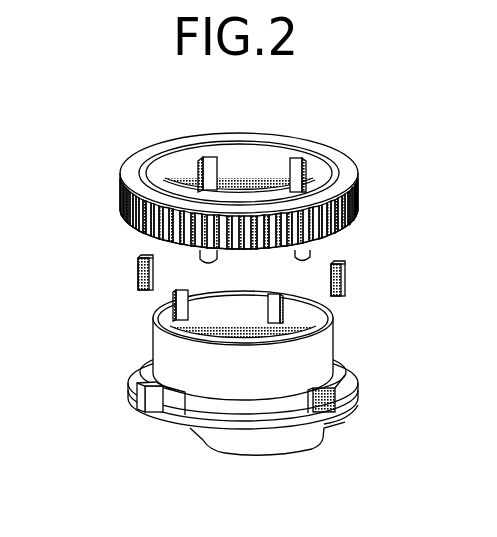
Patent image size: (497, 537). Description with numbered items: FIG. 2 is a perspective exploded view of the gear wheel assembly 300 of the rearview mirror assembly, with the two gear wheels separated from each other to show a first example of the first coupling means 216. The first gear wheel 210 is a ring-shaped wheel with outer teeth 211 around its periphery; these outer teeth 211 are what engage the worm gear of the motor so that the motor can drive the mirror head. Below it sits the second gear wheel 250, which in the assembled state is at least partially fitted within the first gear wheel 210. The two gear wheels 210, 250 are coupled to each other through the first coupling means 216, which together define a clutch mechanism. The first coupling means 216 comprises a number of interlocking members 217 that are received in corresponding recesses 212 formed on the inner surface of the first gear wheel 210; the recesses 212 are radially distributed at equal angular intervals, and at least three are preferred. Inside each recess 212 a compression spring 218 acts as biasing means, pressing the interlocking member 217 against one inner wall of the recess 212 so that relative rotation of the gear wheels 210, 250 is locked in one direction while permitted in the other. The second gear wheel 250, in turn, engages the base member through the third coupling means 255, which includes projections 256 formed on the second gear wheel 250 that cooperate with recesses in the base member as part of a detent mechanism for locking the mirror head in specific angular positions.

The lock assembly 300 is at (403, 245).
The first gear wheel 210 is at (366, 185).
The outer teeth 211 is at (120, 192).
The recesses 212 is at (207, 156).
The first coupling means 216 is at (113, 274).
The interlocking members 217 is at (146, 258).
The compression spring 218 is at (140, 285).
The second gear wheel 250 is at (356, 363).
The third coupling means 255 is at (200, 447).
The projections 256 is at (267, 453).